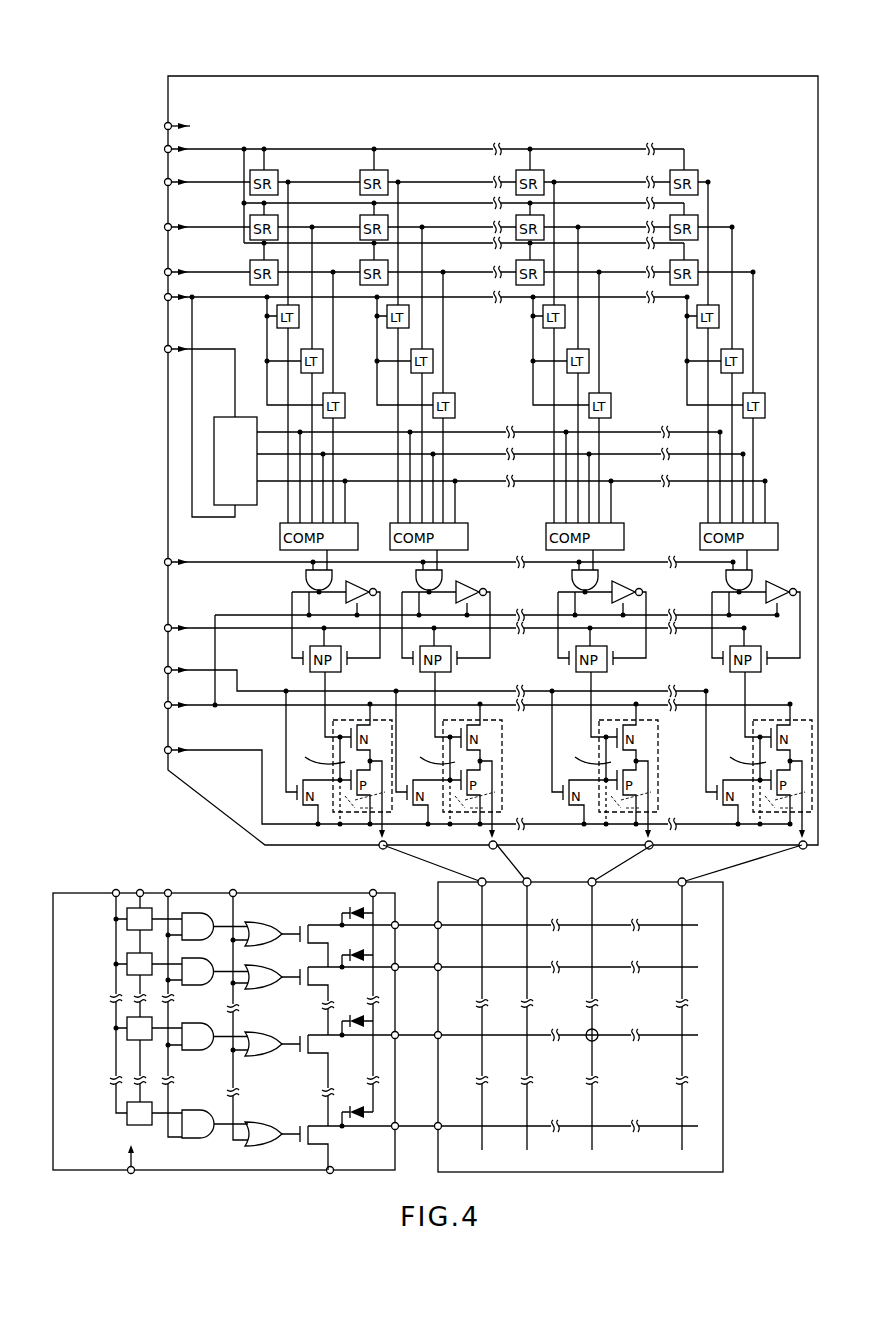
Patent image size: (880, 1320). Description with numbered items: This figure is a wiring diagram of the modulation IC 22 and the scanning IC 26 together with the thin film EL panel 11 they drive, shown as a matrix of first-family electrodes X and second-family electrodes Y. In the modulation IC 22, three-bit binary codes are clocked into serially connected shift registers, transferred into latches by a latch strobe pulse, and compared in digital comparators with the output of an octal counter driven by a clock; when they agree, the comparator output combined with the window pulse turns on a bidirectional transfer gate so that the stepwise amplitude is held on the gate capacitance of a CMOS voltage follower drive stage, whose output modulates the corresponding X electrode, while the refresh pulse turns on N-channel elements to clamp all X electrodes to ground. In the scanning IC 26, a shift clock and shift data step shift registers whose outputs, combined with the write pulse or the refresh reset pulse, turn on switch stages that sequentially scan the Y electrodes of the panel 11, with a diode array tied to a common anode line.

The modulation IC 22 is at (697, 76).
The scanning IC 26 is at (68, 891).
The thin film EL panel 11 is at (723, 1014).